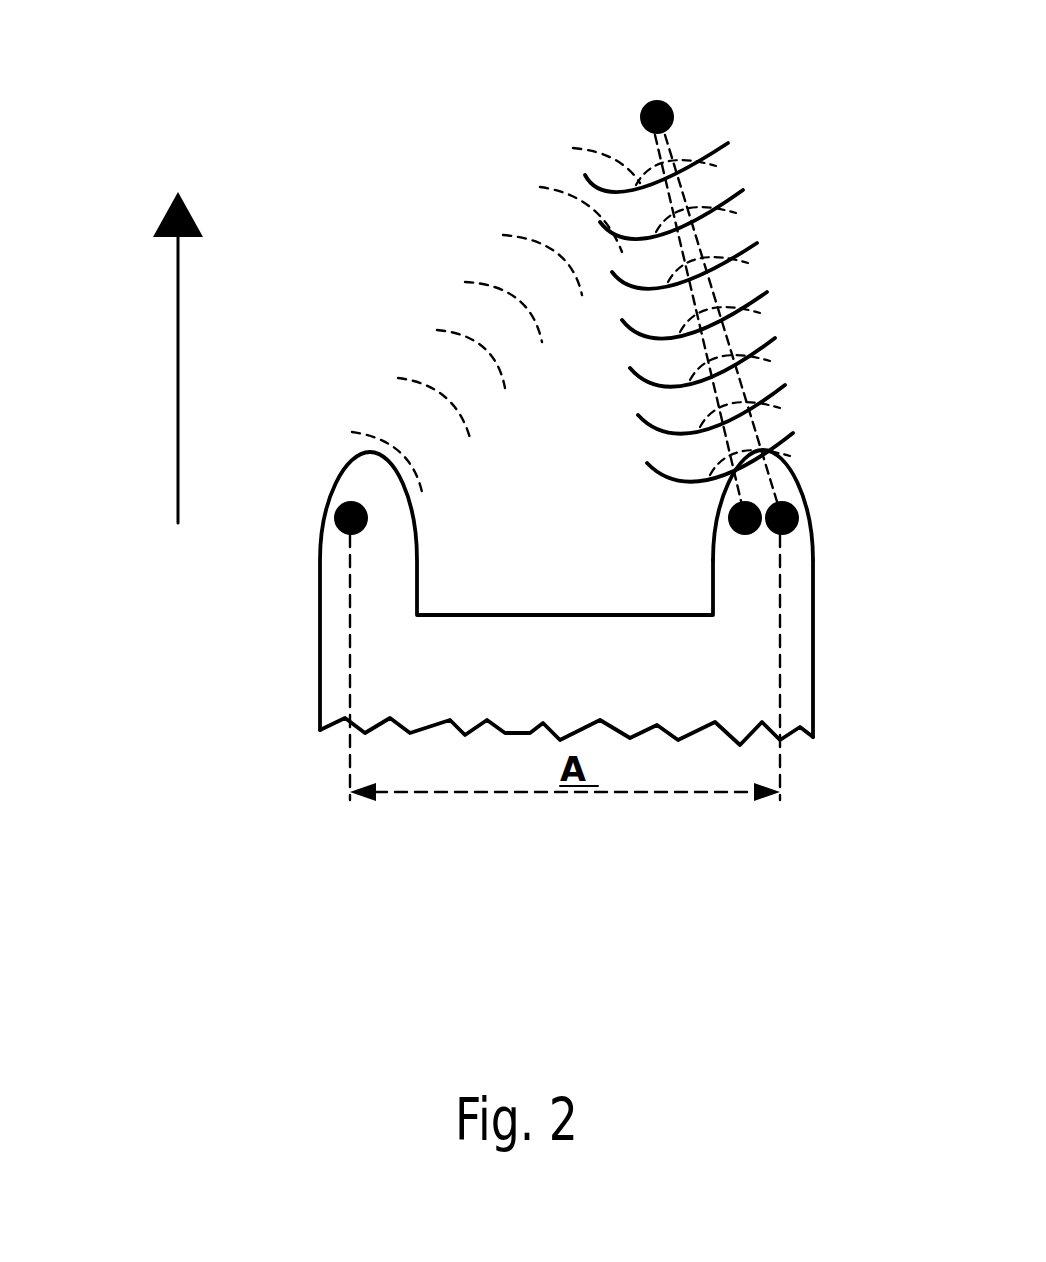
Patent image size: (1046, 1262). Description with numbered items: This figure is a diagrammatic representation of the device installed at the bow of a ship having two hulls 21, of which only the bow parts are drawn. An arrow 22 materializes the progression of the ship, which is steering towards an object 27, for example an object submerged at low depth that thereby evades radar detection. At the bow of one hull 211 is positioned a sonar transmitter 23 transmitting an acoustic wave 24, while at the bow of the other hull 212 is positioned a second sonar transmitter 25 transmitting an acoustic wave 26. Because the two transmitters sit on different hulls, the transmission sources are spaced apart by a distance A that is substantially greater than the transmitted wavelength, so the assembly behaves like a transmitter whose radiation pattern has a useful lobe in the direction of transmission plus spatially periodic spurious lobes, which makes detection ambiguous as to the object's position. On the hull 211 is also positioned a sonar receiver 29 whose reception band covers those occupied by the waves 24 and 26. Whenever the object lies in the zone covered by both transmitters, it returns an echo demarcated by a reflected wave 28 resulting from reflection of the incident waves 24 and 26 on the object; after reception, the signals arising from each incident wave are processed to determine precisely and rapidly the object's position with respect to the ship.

The hulls 21 is at (793, 690).
The hull 211 is at (793, 600).
The other hull 212 is at (345, 600).
The arrow 22 is at (178, 360).
The sonar transmitter 23 is at (800, 510).
The acoustic wave 24 is at (797, 460).
The second sonar transmitter 25 is at (335, 520).
The acoustic wave 26 is at (413, 380).
The object 27 is at (660, 102).
The reflected wave 28 is at (728, 143).
The sonar receiver 29 is at (728, 518).